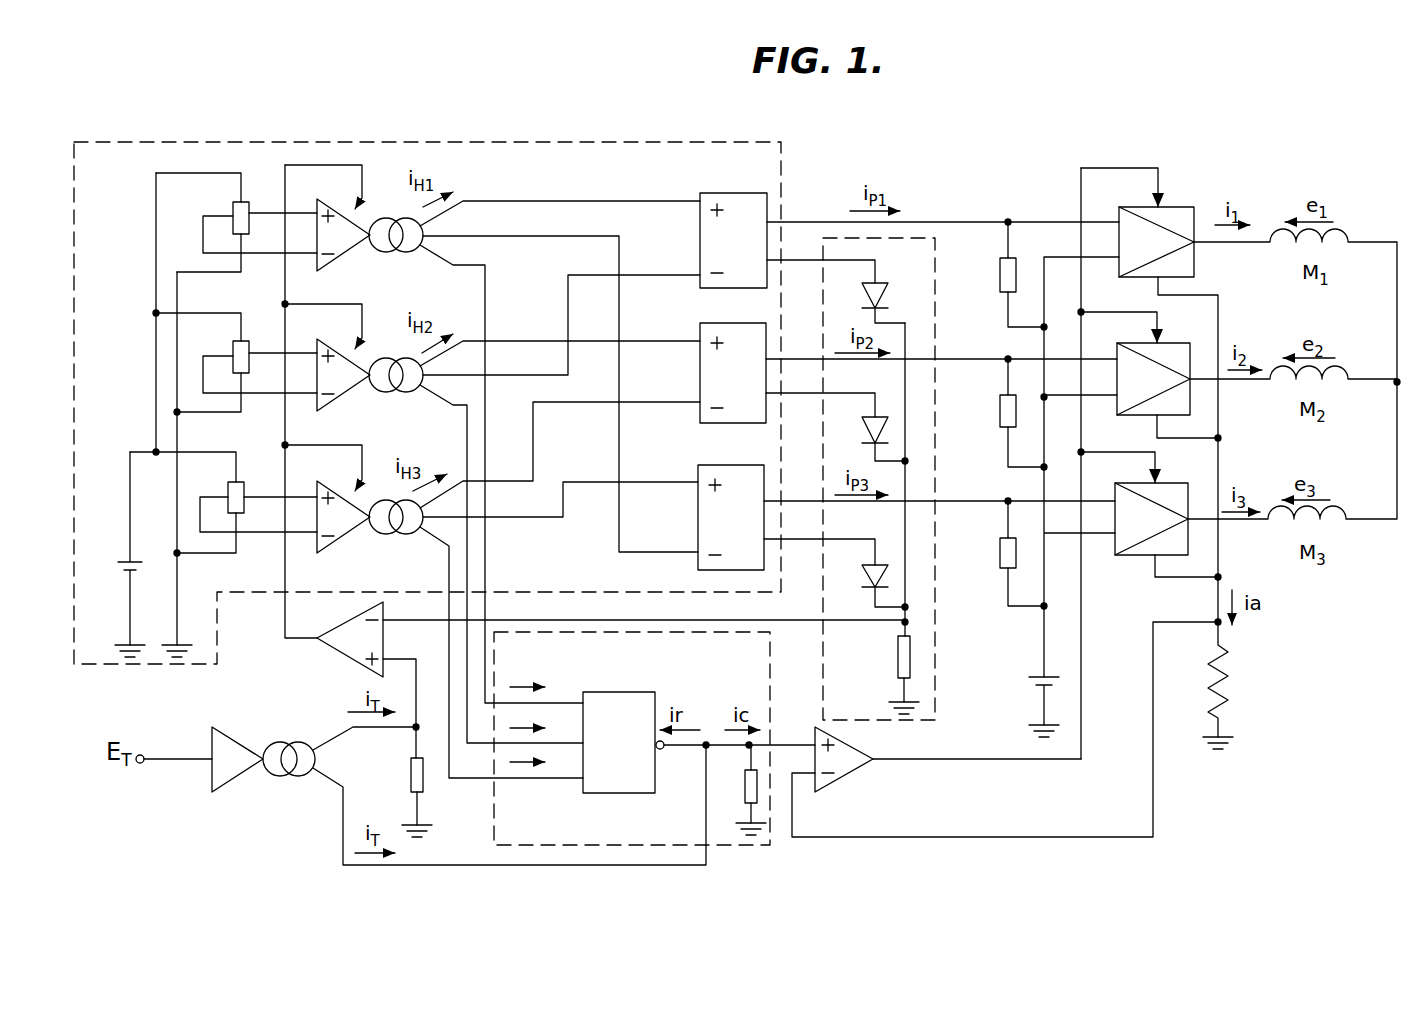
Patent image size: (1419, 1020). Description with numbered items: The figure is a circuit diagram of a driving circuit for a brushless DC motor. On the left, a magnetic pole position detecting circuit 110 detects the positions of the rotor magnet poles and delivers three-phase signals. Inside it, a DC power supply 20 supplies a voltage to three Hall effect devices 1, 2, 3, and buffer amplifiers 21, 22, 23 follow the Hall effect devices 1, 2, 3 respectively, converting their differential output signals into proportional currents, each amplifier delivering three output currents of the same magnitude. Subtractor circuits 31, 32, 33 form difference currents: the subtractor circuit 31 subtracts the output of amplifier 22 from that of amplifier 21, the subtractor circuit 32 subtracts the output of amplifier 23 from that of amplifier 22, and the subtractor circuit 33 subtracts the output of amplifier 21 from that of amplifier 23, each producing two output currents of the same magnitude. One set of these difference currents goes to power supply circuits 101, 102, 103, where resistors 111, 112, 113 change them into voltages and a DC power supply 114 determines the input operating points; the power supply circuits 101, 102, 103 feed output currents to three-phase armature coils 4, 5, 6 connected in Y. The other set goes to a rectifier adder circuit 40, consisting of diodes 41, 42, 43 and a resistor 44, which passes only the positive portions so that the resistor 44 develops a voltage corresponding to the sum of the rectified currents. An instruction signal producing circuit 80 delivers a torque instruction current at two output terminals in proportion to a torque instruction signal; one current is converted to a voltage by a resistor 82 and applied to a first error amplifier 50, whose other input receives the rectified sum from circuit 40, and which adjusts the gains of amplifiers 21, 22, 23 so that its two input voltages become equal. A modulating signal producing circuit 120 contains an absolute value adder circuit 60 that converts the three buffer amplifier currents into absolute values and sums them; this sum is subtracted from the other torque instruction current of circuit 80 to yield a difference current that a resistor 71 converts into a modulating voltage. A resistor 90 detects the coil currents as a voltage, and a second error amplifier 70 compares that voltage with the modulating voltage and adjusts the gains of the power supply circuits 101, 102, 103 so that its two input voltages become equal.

The Hall effect device 1 is at (250, 205).
The Hall effect device 2 is at (250, 344).
The Hall effect device 3 is at (246, 488).
The armature coil 4 is at (1347, 242).
The armature coil 5 is at (1347, 379).
The armature coil 6 is at (1346, 519).
The DC power supply 20 is at (125, 565).
The buffer amplifier 21 is at (356, 210).
The buffer amplifier 22 is at (356, 350).
The buffer amplifier 23 is at (322, 482).
The subtractor circuit 31 is at (700, 193).
The subtractor circuit 32 is at (700, 323).
The subtractor circuit 33 is at (698, 468).
The rectifier adder circuit 40 is at (937, 323).
The diode 41 is at (860, 292).
The diode 42 is at (860, 415).
The diode 43 is at (878, 565).
The resistor 44 is at (898, 660).
The first error amplifier 50 is at (322, 655).
The absolute value adder circuit 60 is at (628, 692).
The second error amplifier 70 is at (860, 775).
The resistor 71 is at (745, 790).
The instruction signal producing circuit 80 is at (238, 742).
The resistor 82 is at (424, 788).
The resistor Rcs 90 is at (1225, 672).
The power supply circuit 101 is at (1185, 207).
The power supply circuit 102 is at (1165, 343).
The power supply circuit 103 is at (1172, 483).
The magnetic pole position detecting circuit 110 is at (493, 141).
The resistor 111 is at (1000, 268).
The resistor 112 is at (1000, 398).
The resistor 113 is at (1000, 548).
The DC power supply 114 is at (1025, 677).
The modulating signal producing circuit 120 is at (490, 832).